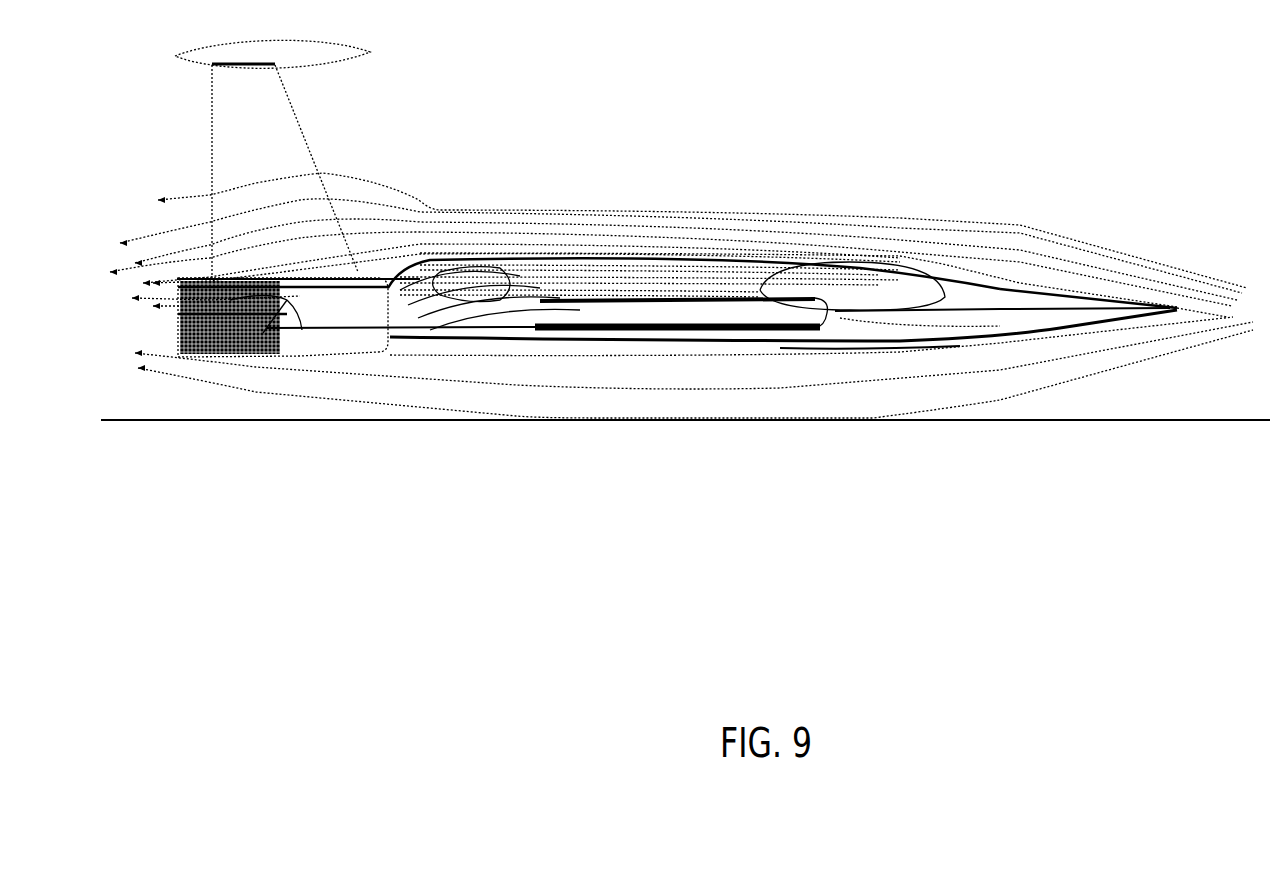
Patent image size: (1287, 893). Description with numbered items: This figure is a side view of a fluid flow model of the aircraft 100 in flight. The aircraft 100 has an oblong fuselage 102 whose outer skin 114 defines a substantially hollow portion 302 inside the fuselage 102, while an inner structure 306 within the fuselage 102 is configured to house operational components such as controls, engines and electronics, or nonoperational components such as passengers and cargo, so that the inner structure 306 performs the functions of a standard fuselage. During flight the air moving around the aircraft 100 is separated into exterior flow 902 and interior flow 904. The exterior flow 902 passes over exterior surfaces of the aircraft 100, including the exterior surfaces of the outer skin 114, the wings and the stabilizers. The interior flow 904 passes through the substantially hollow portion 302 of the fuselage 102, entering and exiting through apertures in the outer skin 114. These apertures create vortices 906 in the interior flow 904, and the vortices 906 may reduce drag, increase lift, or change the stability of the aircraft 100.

The aircraft 100 is at (981, 140).
The fuselage 102 is at (1060, 320).
The outer skin 114 is at (980, 297).
The substantially hollow portion 302 is at (860, 280).
The inner structure 306 is at (900, 340).
The exterior flow 902 is at (762, 212).
The interior flow 904 is at (730, 277).
The vortices 906 is at (573, 280).